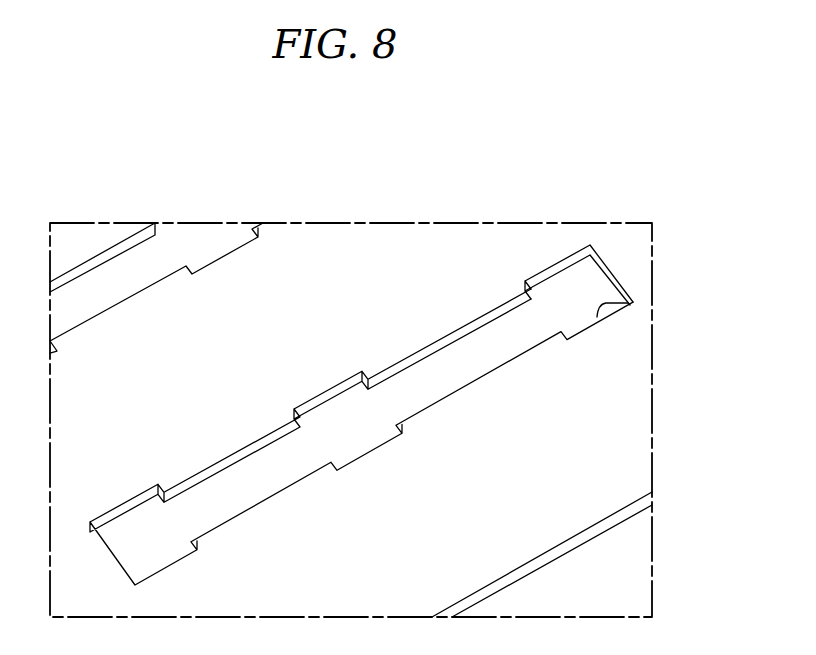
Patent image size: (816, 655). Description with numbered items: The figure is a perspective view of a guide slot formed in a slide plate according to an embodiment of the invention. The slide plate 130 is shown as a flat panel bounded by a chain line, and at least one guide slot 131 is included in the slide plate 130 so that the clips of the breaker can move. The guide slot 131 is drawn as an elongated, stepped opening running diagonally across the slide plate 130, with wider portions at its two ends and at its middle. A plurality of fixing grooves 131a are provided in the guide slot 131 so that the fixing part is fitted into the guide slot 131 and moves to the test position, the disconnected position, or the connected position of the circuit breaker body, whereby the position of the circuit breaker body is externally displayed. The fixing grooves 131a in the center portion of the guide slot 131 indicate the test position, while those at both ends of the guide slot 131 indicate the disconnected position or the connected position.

The slide plate 130 is at (595, 391).
The guide slot 131 is at (633, 302).
The fixing groove 131a is at (576, 271).